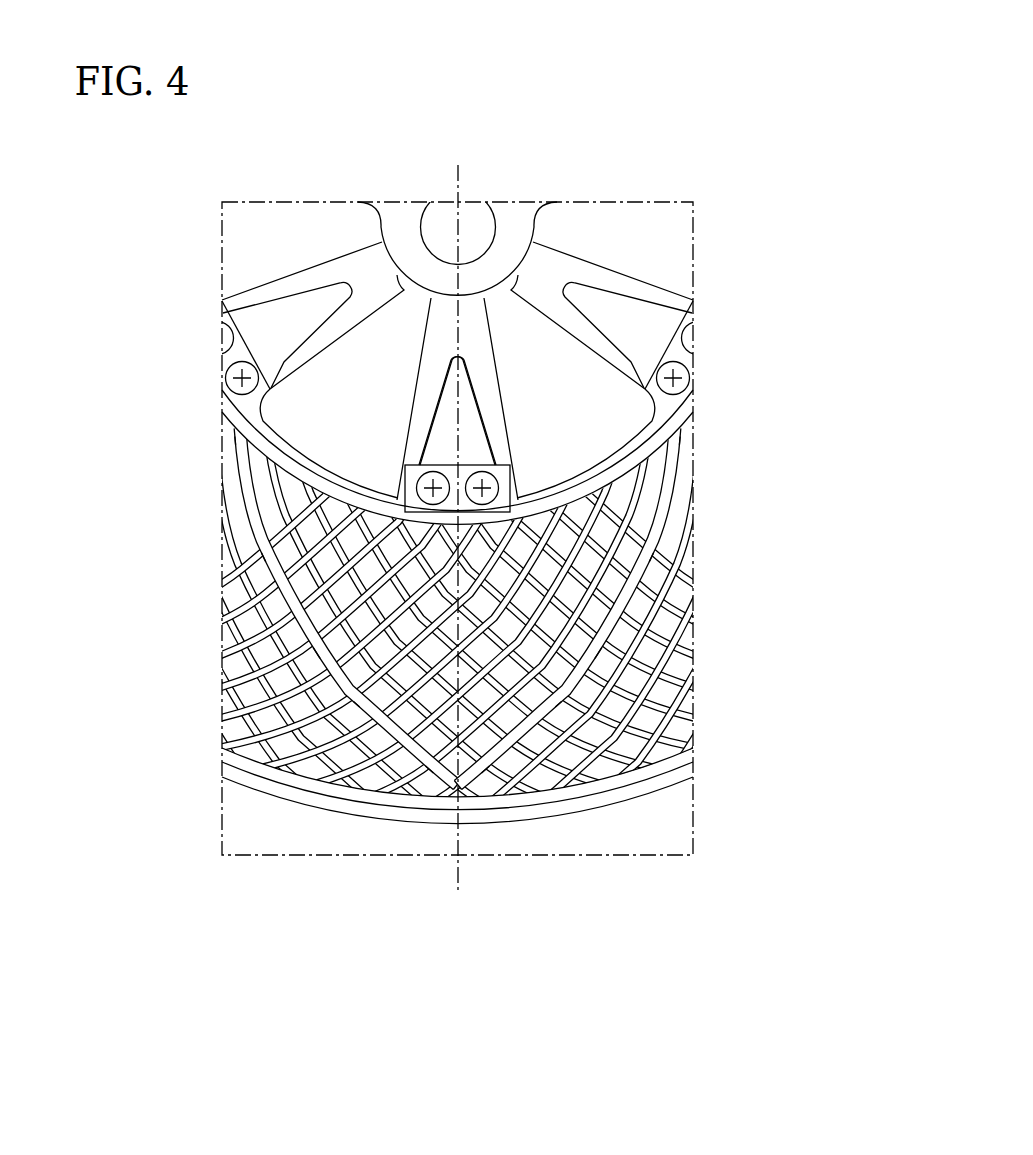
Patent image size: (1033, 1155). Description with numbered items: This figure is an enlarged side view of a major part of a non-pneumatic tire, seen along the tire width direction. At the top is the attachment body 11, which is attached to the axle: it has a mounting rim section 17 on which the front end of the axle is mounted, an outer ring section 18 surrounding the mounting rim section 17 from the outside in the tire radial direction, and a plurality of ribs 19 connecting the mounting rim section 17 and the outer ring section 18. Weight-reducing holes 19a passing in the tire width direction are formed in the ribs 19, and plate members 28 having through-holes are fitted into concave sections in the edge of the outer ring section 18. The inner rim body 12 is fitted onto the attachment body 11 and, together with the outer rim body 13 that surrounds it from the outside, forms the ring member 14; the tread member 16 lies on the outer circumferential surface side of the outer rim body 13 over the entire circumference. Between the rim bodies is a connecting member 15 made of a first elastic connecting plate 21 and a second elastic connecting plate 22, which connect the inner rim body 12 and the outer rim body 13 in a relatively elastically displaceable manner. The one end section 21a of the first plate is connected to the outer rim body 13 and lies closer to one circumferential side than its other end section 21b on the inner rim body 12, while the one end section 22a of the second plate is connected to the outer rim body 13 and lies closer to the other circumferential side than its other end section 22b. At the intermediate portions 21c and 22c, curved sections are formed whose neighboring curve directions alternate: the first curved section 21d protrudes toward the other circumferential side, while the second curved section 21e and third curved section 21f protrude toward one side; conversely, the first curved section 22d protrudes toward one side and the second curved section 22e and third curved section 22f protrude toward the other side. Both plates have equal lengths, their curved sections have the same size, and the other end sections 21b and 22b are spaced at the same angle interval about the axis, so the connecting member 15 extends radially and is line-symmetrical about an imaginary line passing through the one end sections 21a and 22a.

The attachment body 11 is at (412, 294).
The inner rim body 12 is at (276, 479).
The outer rim body 13 is at (261, 784).
The ring member 14 is at (667, 781).
The connecting member 15 is at (458, 702).
The tread member 16 is at (632, 800).
The mounting rim section 17 is at (523, 227).
The outer ring section 18 is at (597, 462).
The rib 19 is at (599, 262).
The weight-reducing hole 19a is at (222, 322).
The first elastic connecting plate 21 is at (310, 680).
The one end section 21a is at (463, 797).
The other end section 21b is at (240, 432).
The intermediate portion 21c is at (345, 702).
The first curved section 21d is at (325, 653).
The second curved section 21e is at (438, 778).
The third curved section 21f is at (266, 559).
The second elastic connecting plate 22 is at (604, 680).
The one end section 22a is at (445, 797).
The other end section 22b is at (675, 432).
The intermediate portion 22c is at (570, 702).
The first curved section 22d is at (590, 653).
The second curved section 22e is at (477, 778).
The third curved section 22f is at (649, 559).
The plate member 28 is at (223, 323).